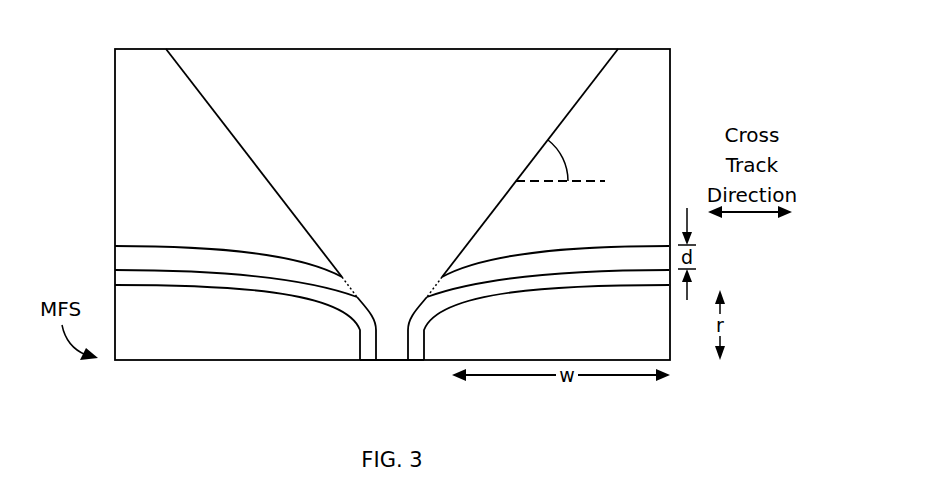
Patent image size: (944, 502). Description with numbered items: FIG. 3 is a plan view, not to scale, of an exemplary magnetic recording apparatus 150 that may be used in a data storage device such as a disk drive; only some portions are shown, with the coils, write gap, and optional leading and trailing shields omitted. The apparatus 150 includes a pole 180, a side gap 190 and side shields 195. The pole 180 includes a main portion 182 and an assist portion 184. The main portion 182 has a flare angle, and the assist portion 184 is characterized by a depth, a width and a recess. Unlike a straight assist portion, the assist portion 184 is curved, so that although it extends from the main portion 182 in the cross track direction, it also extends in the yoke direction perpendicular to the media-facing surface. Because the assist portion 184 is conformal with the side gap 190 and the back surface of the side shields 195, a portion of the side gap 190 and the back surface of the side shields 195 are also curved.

The magnetic recording apparatus 150 is at (413, 28).
The pole 180 is at (216, 147).
The main portion 182 is at (467, 180).
The assist portion 184 is at (392, 271).
The side gap 190 is at (417, 362).
The side shields 195 is at (392, 322).